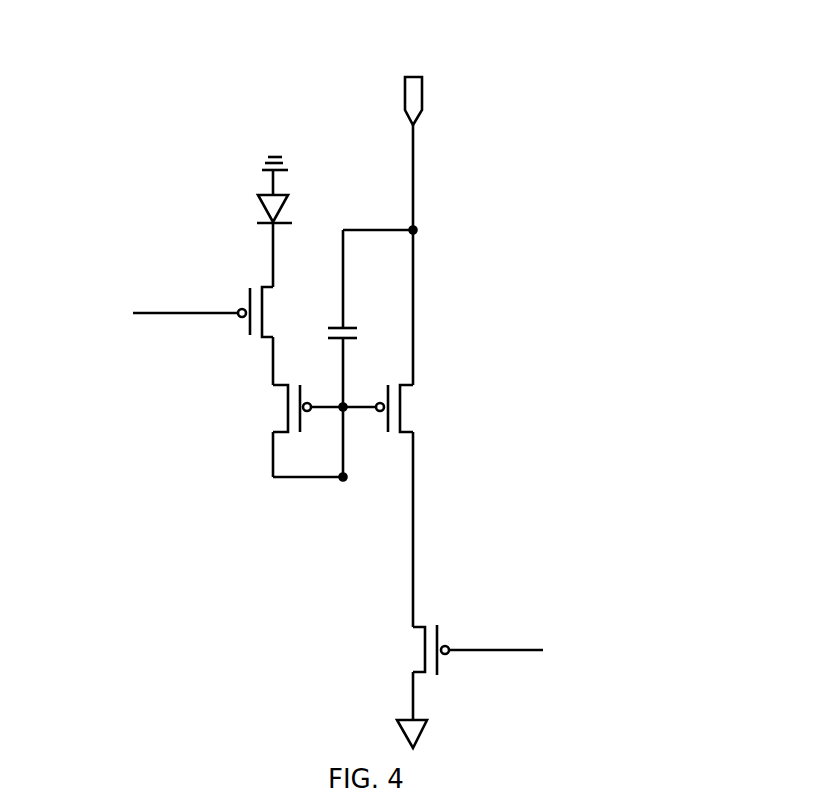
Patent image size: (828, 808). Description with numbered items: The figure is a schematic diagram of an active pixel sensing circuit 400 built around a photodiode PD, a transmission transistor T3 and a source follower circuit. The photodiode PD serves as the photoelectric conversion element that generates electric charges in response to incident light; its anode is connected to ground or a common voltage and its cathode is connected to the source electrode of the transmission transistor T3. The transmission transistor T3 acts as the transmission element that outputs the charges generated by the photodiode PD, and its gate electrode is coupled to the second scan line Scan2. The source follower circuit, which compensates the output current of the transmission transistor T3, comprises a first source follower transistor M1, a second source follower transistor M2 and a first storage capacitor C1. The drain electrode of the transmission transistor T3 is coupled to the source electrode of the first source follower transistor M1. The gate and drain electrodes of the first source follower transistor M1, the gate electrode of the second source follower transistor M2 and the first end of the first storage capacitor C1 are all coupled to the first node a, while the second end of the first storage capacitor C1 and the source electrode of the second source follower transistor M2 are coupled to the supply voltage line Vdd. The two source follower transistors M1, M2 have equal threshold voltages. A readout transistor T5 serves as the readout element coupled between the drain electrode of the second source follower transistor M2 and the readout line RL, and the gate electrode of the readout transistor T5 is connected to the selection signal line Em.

The active pixel sensing circuit 400 is at (690, 758).
The supply voltage line Vdd is at (410, 86).
The first storage capacitor C1 is at (354, 336).
The first node a is at (343, 400).
The photodiode PD is at (256, 222).
The transmission transistor T3 is at (273, 312).
The second scan line Scan2 is at (144, 313).
The first source follower transistor M1 is at (284, 408).
The second source follower transistor M2 is at (404, 408).
The readout transistor T5 is at (436, 644).
The selection signal line Em is at (518, 649).
The readout line RL is at (435, 734).